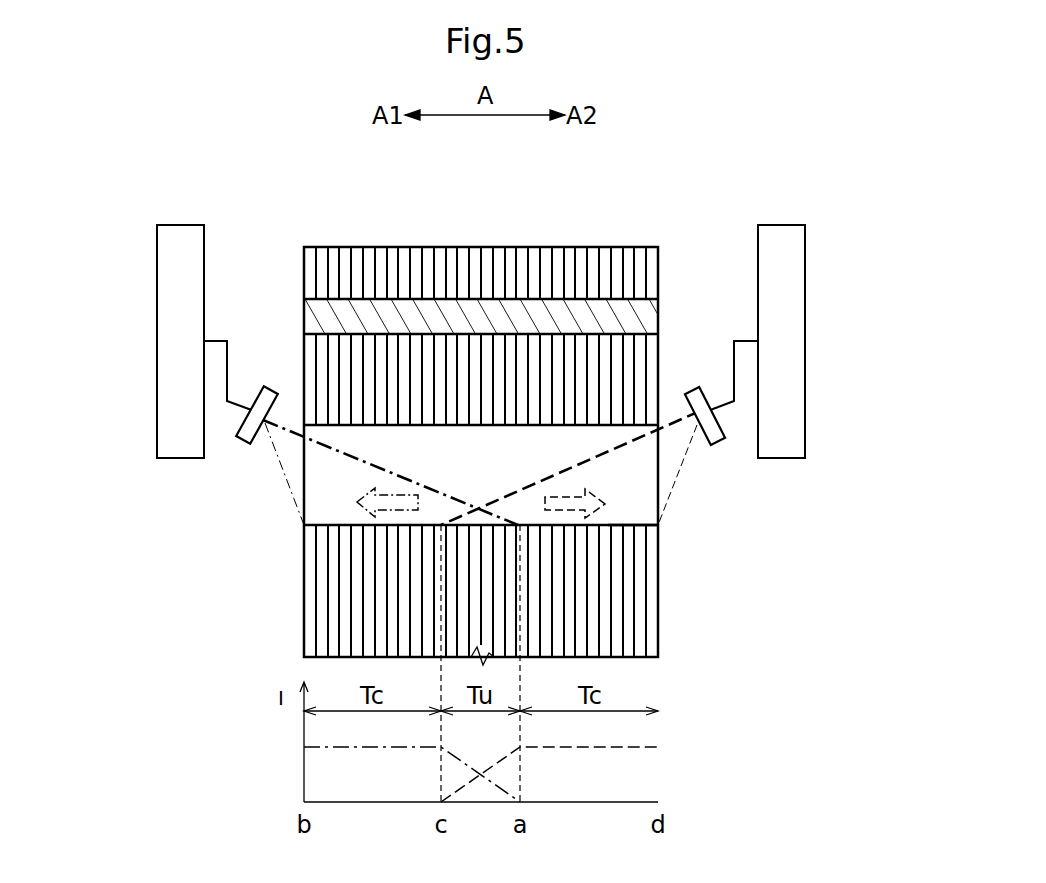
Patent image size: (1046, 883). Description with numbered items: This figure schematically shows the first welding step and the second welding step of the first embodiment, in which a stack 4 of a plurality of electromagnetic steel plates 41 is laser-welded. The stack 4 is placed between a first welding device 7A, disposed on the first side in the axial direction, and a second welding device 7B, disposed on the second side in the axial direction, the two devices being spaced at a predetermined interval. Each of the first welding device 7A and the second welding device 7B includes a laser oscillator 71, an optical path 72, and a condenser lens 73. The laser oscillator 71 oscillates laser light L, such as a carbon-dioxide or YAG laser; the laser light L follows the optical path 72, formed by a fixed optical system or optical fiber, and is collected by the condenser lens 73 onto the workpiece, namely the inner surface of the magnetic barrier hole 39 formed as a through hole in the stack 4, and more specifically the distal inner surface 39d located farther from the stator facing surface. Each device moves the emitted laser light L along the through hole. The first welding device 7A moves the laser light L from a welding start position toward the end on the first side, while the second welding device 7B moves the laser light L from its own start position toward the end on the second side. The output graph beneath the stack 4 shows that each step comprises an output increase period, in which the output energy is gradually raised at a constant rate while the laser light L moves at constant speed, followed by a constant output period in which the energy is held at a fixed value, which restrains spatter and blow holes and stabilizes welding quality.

The stack 4 is at (520, 407).
The electromagnetic steel plate 41 is at (558, 250).
The magnetic barrier hole 39 is at (512, 425).
The distal inner surface 39d is at (639, 520).
The first welding device 7A is at (160, 197).
The second welding device 7B is at (856, 268).
The laser oscillator 71 is at (185, 460).
The optical path 72 is at (227, 357).
The condenser lens 73 is at (267, 387).
The laser light L is at (360, 453).